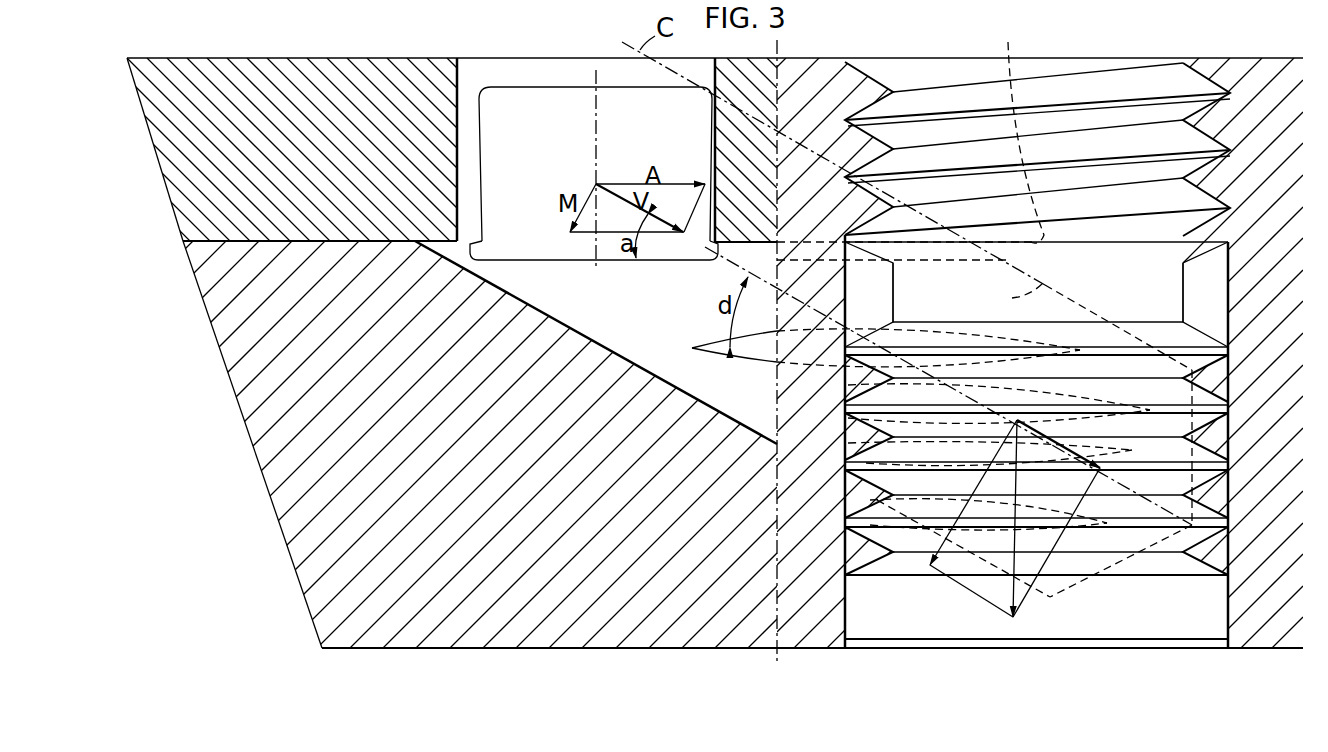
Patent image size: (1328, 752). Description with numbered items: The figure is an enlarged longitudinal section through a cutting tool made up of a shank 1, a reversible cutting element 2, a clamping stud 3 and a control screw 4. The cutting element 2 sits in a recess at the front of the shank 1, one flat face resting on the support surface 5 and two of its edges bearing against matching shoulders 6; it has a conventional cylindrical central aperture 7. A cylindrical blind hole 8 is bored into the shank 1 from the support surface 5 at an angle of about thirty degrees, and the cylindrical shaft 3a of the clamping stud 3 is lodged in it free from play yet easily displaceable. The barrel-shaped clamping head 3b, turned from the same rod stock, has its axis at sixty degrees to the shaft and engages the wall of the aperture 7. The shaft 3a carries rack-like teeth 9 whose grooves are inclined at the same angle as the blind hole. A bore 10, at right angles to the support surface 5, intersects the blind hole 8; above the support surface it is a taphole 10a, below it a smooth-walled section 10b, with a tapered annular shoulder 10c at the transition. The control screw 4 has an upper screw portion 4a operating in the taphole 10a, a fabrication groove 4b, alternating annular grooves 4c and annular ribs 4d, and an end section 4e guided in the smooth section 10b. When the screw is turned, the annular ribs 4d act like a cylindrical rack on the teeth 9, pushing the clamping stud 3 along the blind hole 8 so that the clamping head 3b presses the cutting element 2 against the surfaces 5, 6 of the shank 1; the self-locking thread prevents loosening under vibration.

The shank 1 is at (298, 452).
The reversible cutting element 2 is at (316, 77).
The clamping stud 3 is at (592, 166).
The cylindrical shaft 3a is at (1010, 297).
The clamping head 3b is at (544, 95).
The control screw 4 is at (1003, 360).
The upper screw portion 4a is at (1085, 90).
The annular groove 4b is at (893, 297).
The annular grooves 4c is at (862, 527).
The annular ribs 4d is at (872, 417).
The end section 4e is at (963, 627).
The support surface 5 is at (213, 243).
The shoulders 6 is at (1023, 130).
The cylindrical central aperture 7 is at (459, 80).
The cylindrical blind hole 8 is at (466, 262).
The rack-like teeth 9 is at (760, 357).
The bore 10 is at (1040, 331).
The taphole 10a is at (856, 133).
The smooth-walled section 10b is at (1183, 298).
The tapered annular shoulder 10c is at (868, 222).